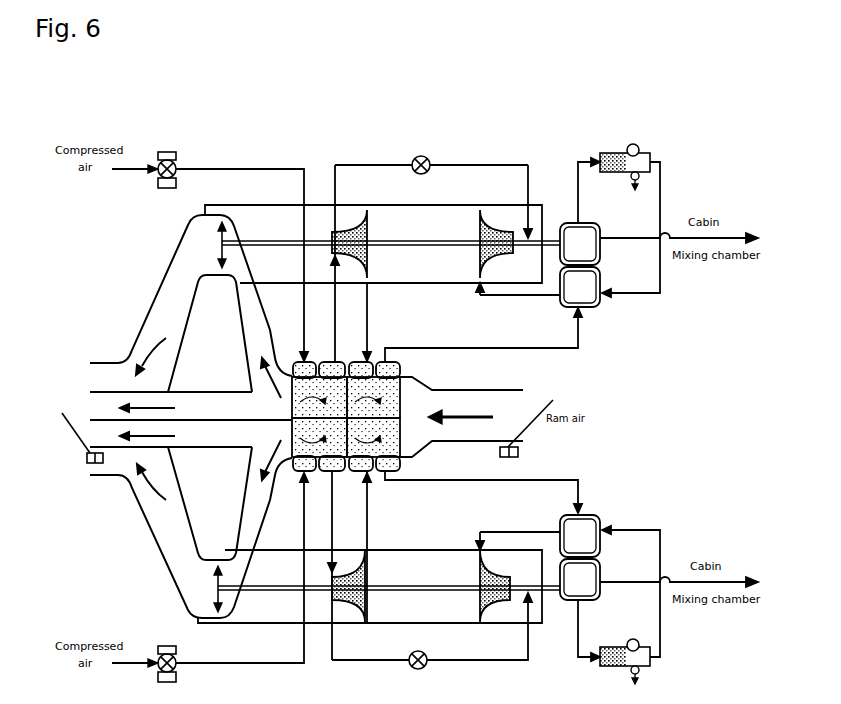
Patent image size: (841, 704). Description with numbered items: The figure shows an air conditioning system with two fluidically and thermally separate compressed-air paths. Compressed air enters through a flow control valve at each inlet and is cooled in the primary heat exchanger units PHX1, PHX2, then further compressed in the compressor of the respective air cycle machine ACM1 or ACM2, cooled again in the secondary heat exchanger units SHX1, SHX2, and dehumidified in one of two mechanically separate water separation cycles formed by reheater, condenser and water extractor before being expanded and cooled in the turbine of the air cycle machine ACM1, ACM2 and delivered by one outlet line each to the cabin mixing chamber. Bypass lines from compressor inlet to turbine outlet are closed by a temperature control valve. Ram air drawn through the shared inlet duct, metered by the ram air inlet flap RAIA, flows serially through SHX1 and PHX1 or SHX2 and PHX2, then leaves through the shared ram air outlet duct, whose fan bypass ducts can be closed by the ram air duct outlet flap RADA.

The air cycle machine ACM1 is at (389, 244).
The air cycle machine ACM2 is at (387, 586).
The primary heat exchanger unit PHX1 is at (319, 397).
The secondary heat exchanger unit SHX1 is at (373, 397).
The primary heat exchanger unit PHX2 is at (319, 437).
The secondary heat exchanger unit SHX2 is at (373, 437).
The ram air duct outlet flap RADA is at (75, 439).
The ram air inlet flap RAIA is at (526, 429).